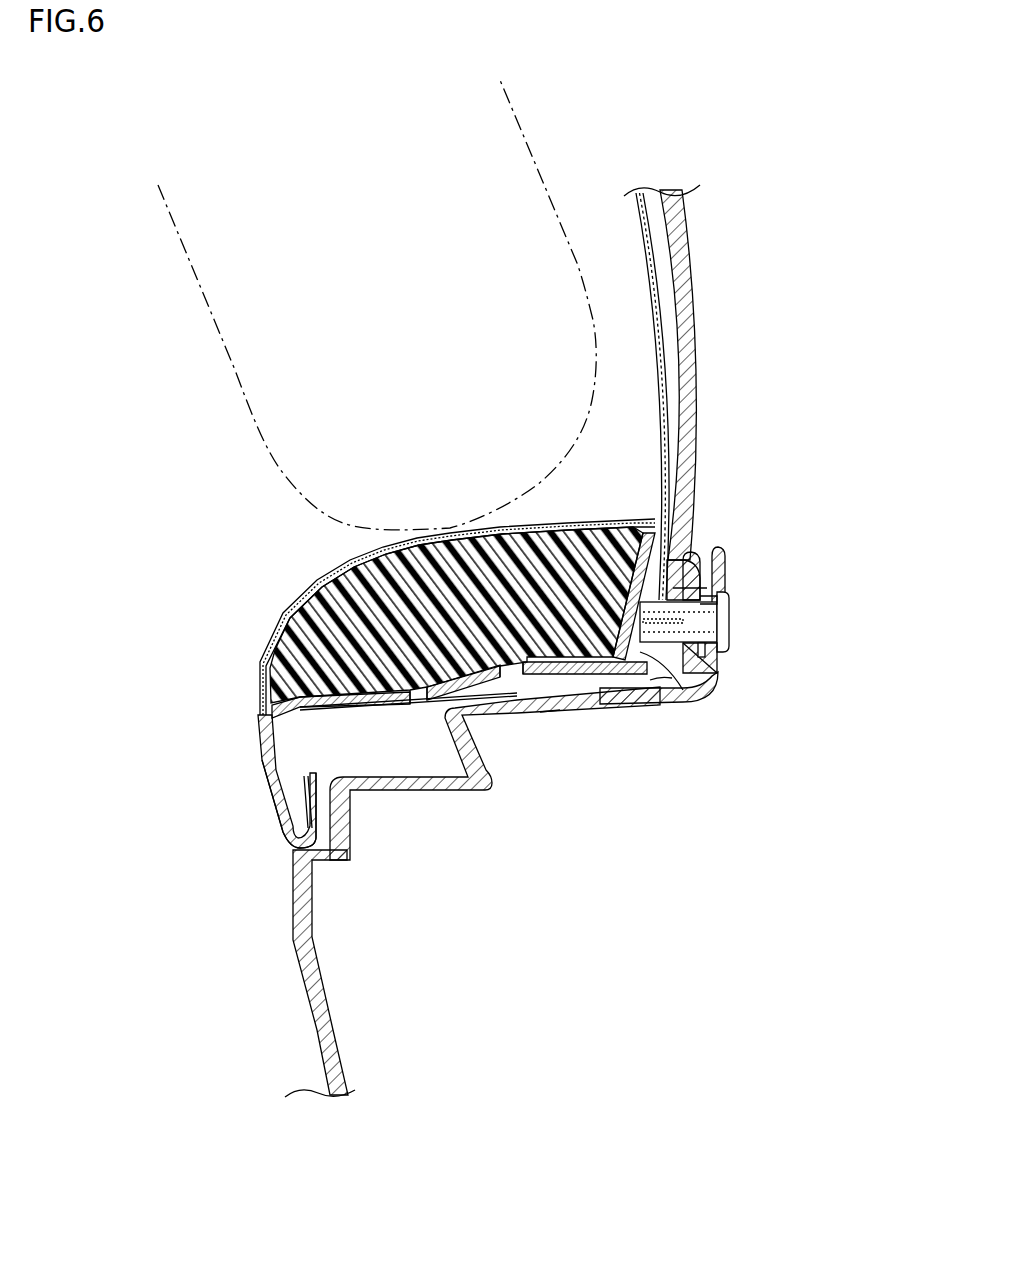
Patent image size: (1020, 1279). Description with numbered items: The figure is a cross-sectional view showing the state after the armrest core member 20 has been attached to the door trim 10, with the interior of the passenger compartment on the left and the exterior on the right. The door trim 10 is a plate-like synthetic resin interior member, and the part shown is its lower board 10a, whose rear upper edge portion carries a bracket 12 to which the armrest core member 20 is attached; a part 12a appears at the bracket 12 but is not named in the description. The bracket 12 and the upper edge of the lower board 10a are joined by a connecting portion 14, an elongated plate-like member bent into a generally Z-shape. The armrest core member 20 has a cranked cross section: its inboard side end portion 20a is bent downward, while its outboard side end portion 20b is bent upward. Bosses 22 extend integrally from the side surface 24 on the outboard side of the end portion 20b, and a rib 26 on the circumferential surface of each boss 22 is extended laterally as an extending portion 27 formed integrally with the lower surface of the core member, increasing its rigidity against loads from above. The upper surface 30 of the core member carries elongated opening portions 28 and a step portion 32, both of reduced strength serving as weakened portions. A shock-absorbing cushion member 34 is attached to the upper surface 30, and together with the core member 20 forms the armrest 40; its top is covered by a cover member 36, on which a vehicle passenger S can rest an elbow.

The vehicle passenger S is at (525, 140).
The door trim 10 is at (766, 318).
The lower board 10a is at (310, 1013).
The bracket 12 is at (715, 585).
The bolt 12a is at (703, 620).
The connecting portion 14 is at (512, 712).
The armrest core member 20 is at (373, 705).
The inboard side end portion 20a is at (267, 788).
The outboard side end portion 20b is at (697, 560).
The boss 22 is at (735, 600).
The side surface 24 is at (660, 663).
The rib 26 is at (740, 590).
The extending portion 27 is at (547, 712).
The opening portions 28 is at (540, 707).
The upper surface 30 is at (550, 580).
The step portion 32 is at (405, 600).
The cushion member 34 is at (300, 600).
The cover member 36 is at (330, 615).
The armrest for a vehicle 40 is at (222, 602).